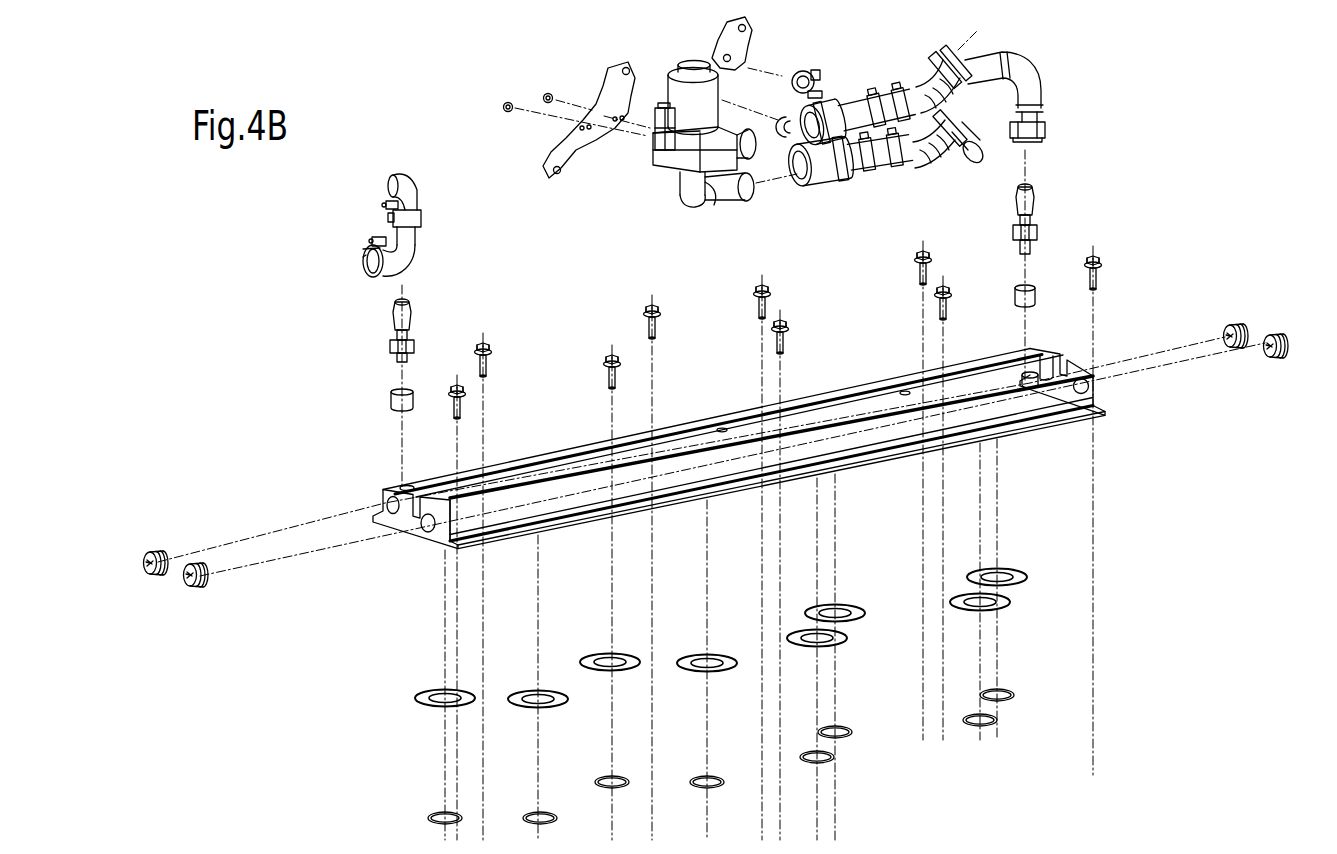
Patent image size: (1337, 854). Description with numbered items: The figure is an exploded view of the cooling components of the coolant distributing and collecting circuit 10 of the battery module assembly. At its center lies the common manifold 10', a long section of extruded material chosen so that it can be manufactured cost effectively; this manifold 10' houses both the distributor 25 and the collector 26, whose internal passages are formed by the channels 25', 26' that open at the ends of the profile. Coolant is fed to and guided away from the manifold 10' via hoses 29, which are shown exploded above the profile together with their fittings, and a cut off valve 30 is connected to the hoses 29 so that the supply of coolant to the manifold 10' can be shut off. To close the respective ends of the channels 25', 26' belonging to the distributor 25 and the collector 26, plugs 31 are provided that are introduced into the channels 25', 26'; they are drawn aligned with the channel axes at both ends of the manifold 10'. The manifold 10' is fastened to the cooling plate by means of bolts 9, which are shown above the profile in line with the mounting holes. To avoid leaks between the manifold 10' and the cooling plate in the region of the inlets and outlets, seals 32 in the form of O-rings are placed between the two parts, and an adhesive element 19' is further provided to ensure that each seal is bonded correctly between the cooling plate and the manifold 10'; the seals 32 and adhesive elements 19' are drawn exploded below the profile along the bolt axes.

The bolts 9 is at (926, 255).
The coolant distributing and collecting circuit 10 is at (216, 277).
The manifold 10' is at (1089, 409).
The adhesive element 19' is at (752, 624).
The distributor 25 is at (400, 569).
The channel 25' is at (390, 551).
The collector 26 is at (739, 449).
The channel 26' is at (353, 465).
The hoses 29 is at (407, 180).
The cut off valve 30 is at (680, 92).
The plugs 31 is at (155, 553).
The seals 32 is at (532, 812).